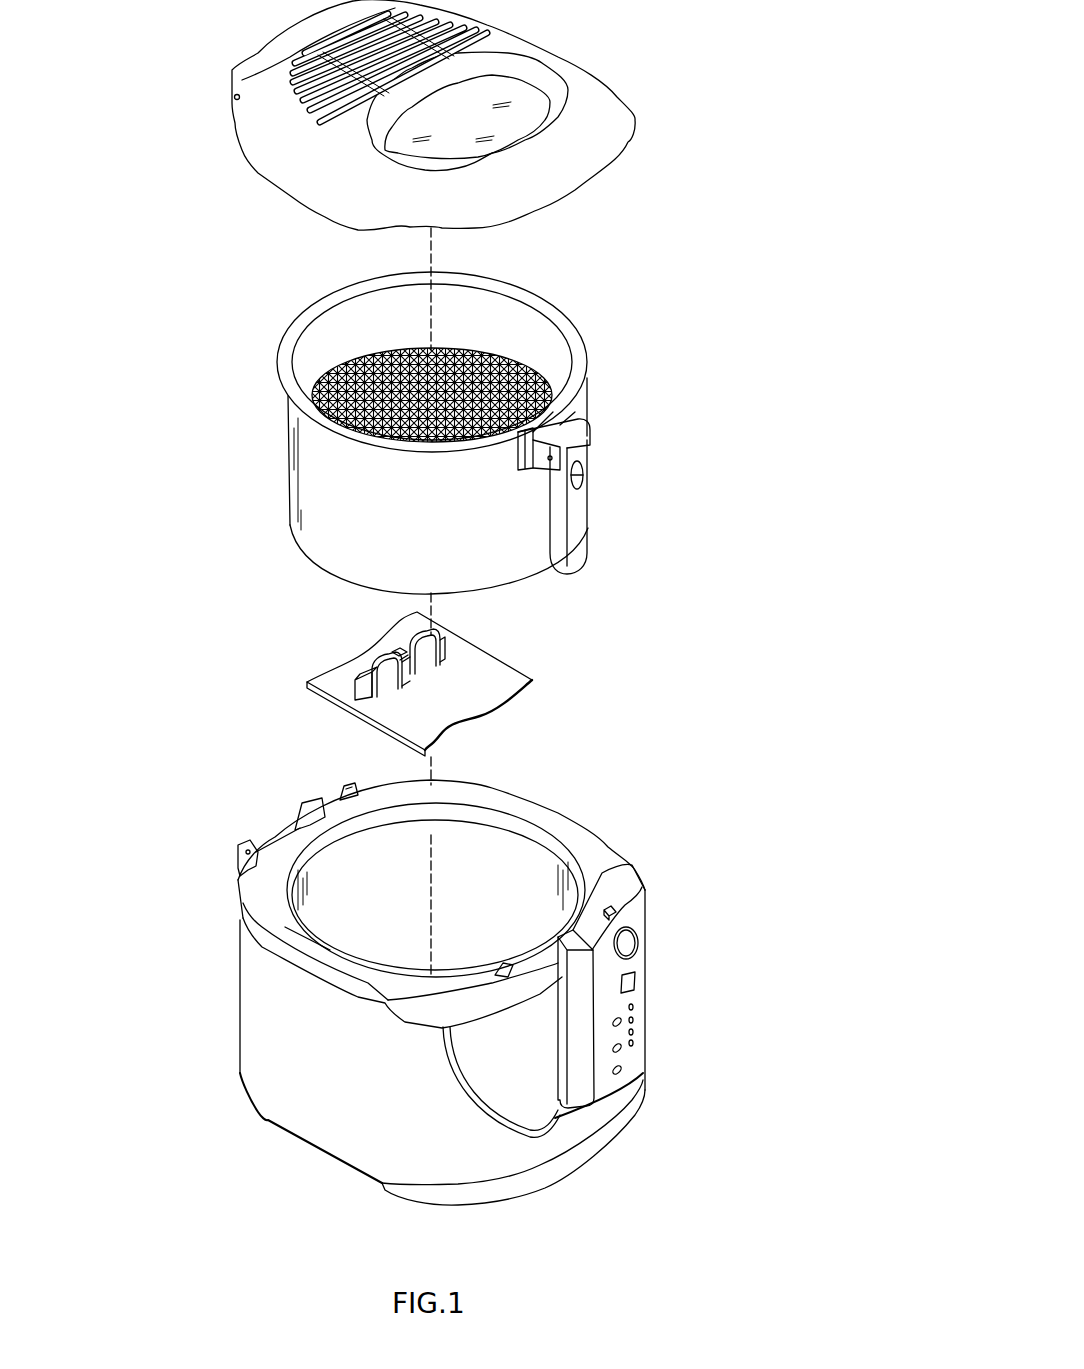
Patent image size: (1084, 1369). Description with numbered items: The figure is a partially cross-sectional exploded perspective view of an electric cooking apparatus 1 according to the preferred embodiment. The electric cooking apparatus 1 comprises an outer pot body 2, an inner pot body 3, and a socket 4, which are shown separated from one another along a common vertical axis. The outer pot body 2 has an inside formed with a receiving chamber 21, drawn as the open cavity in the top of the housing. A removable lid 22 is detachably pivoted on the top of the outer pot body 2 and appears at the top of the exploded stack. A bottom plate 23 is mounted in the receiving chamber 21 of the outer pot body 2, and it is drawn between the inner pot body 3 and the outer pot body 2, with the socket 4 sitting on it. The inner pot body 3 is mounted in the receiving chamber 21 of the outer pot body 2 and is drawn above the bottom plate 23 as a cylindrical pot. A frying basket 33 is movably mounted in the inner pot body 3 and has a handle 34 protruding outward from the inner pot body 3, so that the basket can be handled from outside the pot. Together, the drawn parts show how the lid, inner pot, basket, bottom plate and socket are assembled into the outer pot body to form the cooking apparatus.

The electric cooking apparatus 1 is at (767, 1060).
The outer pot body 2 is at (255, 1035).
The receiving chamber 21 is at (502, 880).
The removable lid 22 is at (610, 114).
The bottom plate 23 is at (503, 680).
The inner pot body 3 is at (567, 337).
The frying basket 33 is at (338, 366).
The handle 34 is at (578, 533).
The socket 4 is at (362, 668).